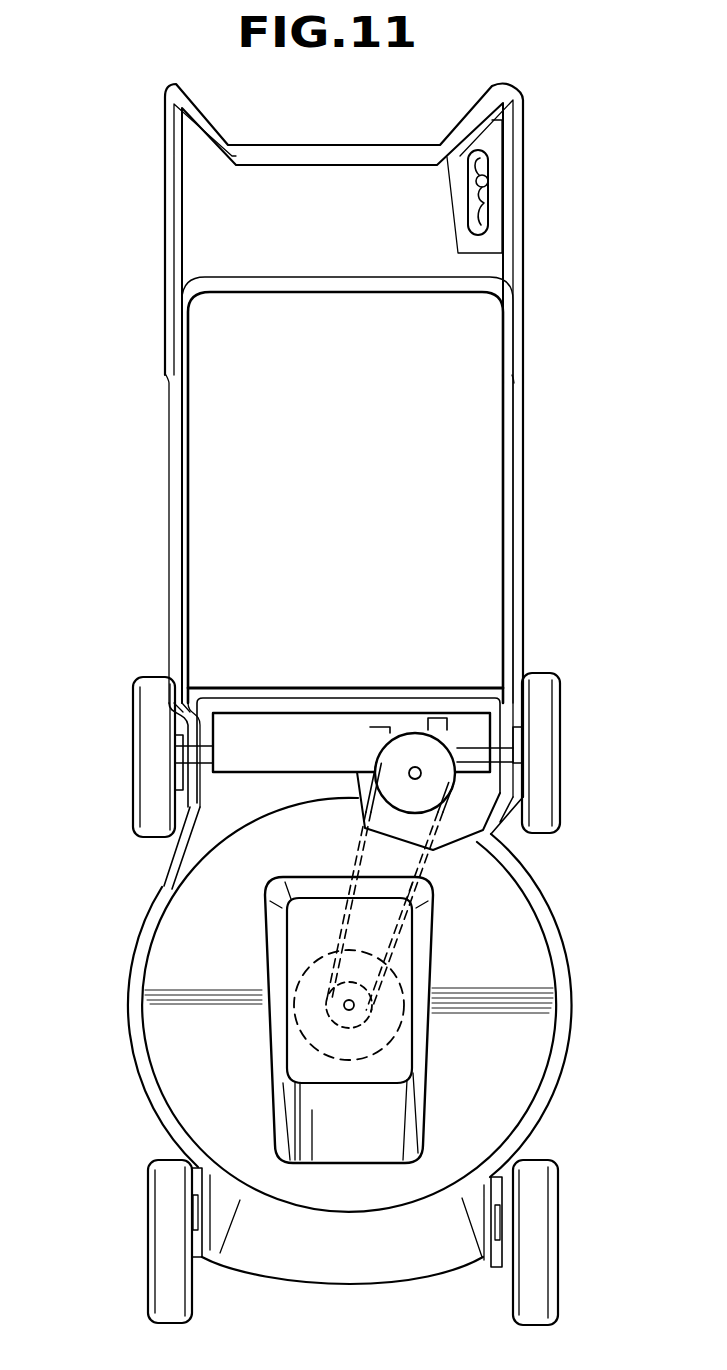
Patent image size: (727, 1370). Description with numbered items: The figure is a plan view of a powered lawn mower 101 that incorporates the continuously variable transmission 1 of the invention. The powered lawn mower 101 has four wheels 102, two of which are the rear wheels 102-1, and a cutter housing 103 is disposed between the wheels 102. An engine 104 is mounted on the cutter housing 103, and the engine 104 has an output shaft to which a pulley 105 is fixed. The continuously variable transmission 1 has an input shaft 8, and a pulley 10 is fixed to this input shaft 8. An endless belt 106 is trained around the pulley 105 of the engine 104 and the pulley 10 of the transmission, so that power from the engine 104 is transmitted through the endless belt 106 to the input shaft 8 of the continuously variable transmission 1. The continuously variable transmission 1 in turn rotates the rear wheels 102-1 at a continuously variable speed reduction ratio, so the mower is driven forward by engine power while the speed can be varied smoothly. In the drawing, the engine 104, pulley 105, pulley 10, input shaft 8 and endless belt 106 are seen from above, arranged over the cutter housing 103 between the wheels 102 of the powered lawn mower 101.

The continuously variable transmission 1 is at (440, 719).
The input shaft 8 is at (421, 768).
The pulley 10 is at (405, 745).
The powered lawn mower 101 is at (564, 878).
The wheels 102 is at (173, 1245).
The rear wheels 102-1 is at (145, 783).
The cutter housing 103 is at (538, 975).
The engine 104 is at (420, 1040).
The pulley 105 is at (376, 964).
The endless belt 106 is at (443, 830).